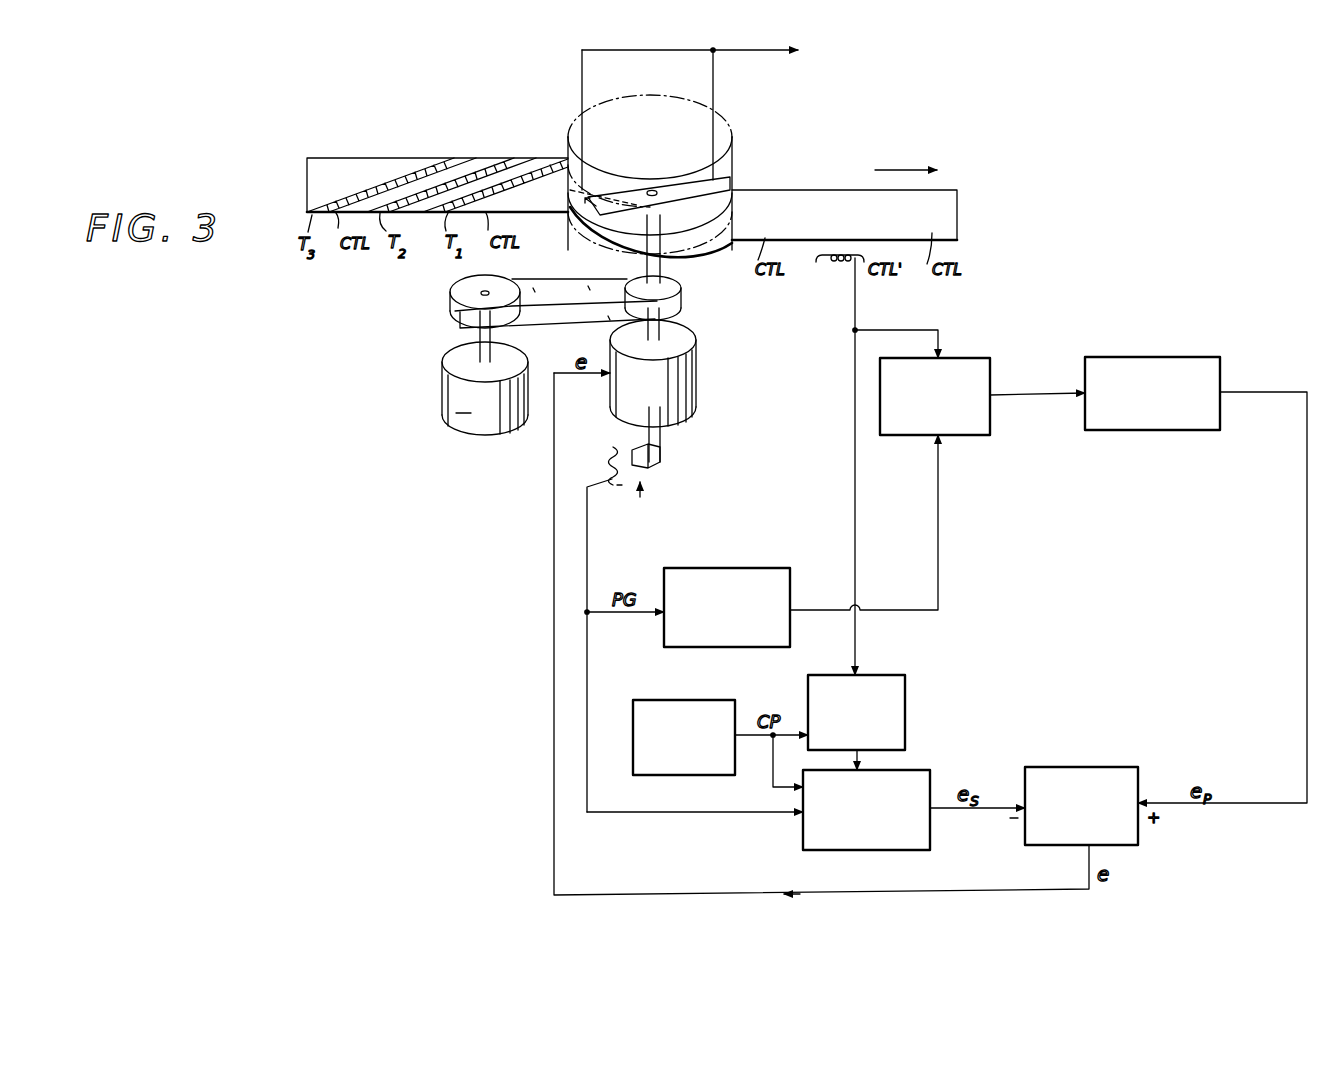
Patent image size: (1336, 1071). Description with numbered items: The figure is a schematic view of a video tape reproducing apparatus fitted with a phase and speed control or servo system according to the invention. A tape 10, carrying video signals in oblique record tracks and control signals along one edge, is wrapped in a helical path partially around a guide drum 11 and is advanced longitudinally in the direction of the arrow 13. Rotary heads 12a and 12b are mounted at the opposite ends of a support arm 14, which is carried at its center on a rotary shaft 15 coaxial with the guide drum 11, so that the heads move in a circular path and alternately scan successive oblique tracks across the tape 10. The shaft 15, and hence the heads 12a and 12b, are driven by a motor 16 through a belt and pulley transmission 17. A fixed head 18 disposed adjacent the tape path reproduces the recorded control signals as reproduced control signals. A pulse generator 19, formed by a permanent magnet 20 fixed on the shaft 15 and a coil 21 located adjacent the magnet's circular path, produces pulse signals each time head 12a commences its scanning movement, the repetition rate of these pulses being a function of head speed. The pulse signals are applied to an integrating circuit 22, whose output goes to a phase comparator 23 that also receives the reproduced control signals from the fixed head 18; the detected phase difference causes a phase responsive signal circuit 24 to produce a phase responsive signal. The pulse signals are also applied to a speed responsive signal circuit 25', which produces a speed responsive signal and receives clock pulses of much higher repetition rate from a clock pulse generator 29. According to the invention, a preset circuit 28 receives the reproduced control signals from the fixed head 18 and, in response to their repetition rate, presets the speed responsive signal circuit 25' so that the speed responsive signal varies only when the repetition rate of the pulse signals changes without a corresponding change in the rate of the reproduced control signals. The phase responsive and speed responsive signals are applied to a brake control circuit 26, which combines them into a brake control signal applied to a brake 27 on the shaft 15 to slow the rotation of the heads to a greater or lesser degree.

The tape 10 is at (374, 163).
The guide drum 11 is at (678, 95).
The rotary head 12a is at (806, 181).
The rotary head 12b is at (570, 231).
The arrow 13 is at (904, 167).
The support arm 14 is at (682, 177).
The rotary shaft 15 is at (681, 278).
The motor 16 is at (442, 374).
The belt and pulley transmission 17 is at (556, 318).
The fixed head 18 is at (832, 260).
The pulse generator 19 is at (638, 505).
The permanent magnet 20 is at (652, 459).
The coil 21 is at (612, 453).
The integrating circuit 22 is at (767, 568).
The phase comparator 23 is at (963, 358).
The phase responsive signal circuit 24 is at (1212, 357).
The speed responsive signal circuit 25' is at (881, 794).
The brake control circuit 26 is at (1107, 752).
The brake 27 is at (697, 376).
The preset circuit 28 is at (905, 686).
The clock pulse generator 29 is at (648, 706).